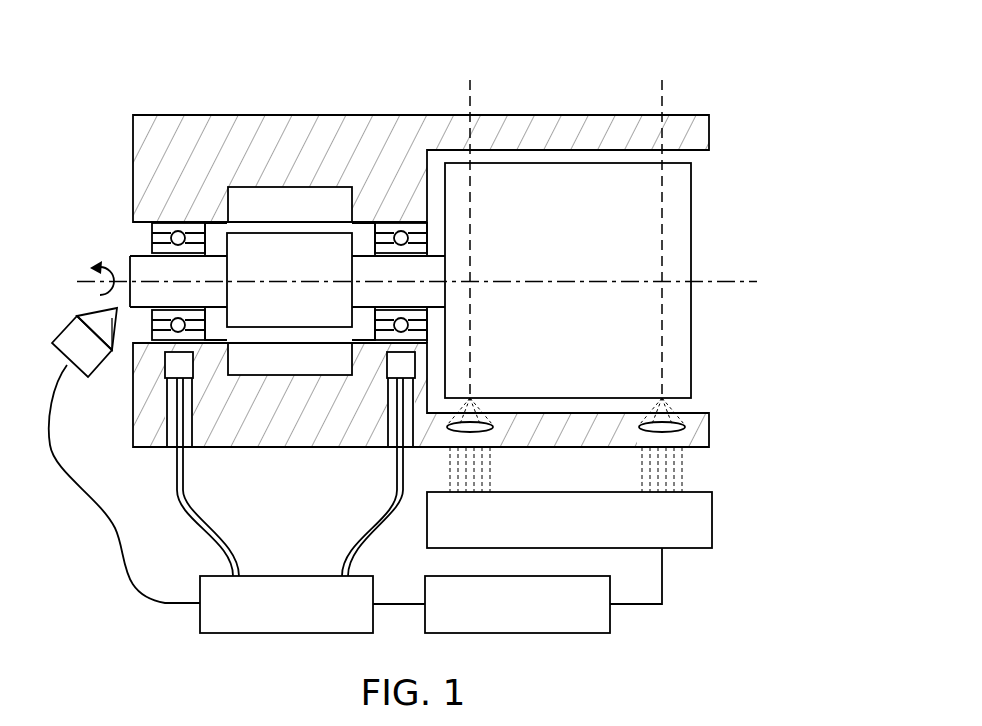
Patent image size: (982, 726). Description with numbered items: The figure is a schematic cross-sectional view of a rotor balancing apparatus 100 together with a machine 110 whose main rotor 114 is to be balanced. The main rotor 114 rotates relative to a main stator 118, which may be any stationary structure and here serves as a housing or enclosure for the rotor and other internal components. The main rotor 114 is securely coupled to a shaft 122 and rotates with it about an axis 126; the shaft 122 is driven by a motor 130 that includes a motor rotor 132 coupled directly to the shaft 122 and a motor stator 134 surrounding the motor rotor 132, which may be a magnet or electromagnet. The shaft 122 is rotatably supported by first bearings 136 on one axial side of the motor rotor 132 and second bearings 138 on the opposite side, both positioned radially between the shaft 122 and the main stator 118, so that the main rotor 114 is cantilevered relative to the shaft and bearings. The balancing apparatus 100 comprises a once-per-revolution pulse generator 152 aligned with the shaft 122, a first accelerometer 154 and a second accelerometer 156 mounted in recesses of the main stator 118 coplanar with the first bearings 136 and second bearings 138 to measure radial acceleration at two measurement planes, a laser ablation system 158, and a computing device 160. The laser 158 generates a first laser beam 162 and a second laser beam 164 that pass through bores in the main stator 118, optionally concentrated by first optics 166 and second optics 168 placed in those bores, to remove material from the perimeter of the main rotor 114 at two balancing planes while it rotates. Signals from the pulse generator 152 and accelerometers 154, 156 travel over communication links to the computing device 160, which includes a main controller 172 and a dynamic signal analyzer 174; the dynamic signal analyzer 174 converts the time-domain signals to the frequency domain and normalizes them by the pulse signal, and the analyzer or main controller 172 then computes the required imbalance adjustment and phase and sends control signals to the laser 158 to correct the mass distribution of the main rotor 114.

The rotor balancing apparatus 100 is at (92, 525).
The machine 110 is at (752, 87).
The main rotor 114 is at (692, 220).
The main stator 118 is at (150, 115).
The shaft 122 is at (130, 264).
The axis 126 is at (735, 281).
The motor 130 is at (359, 218).
The motor rotor 132 is at (312, 240).
The motor stator 134 is at (268, 196).
The first bearings 136 is at (152, 232).
The second bearings 138 is at (385, 230).
The once-per-revolution pulse generator 152 is at (65, 325).
The first accelerometer 154 is at (177, 364).
The second accelerometer 156 is at (403, 363).
The laser ablation system 158 is at (555, 532).
The computing device 160 is at (172, 621).
The first laser beam 162 is at (450, 472).
The second laser beam 164 is at (680, 478).
The first optics 166 is at (480, 410).
The second optics 168 is at (677, 413).
The main controller 172 is at (503, 615).
The dynamic signal analyzer 174 is at (272, 615).